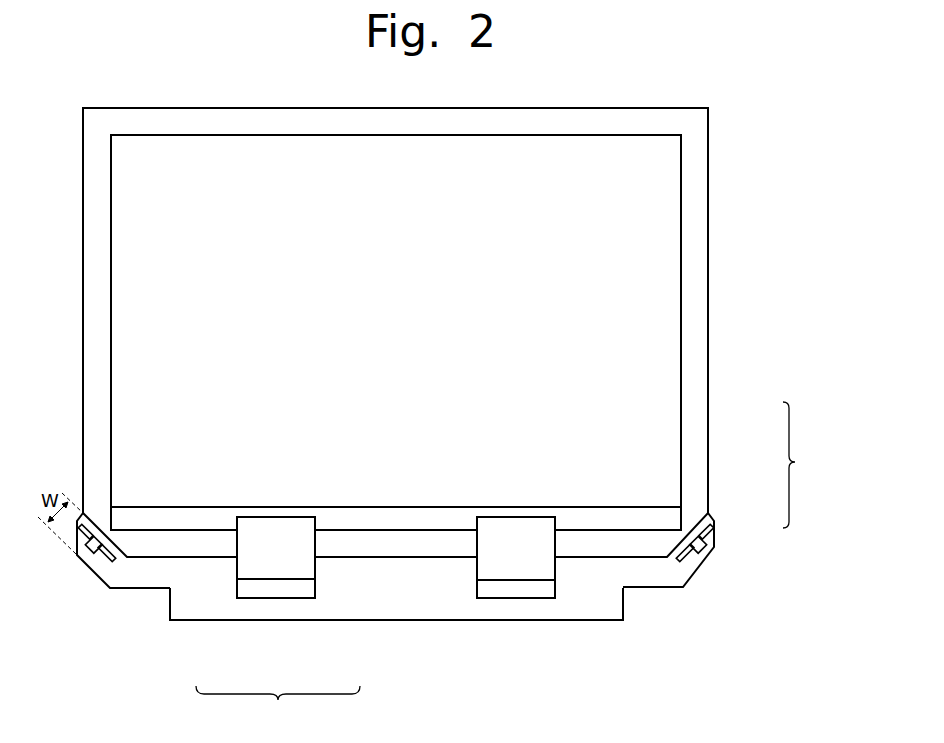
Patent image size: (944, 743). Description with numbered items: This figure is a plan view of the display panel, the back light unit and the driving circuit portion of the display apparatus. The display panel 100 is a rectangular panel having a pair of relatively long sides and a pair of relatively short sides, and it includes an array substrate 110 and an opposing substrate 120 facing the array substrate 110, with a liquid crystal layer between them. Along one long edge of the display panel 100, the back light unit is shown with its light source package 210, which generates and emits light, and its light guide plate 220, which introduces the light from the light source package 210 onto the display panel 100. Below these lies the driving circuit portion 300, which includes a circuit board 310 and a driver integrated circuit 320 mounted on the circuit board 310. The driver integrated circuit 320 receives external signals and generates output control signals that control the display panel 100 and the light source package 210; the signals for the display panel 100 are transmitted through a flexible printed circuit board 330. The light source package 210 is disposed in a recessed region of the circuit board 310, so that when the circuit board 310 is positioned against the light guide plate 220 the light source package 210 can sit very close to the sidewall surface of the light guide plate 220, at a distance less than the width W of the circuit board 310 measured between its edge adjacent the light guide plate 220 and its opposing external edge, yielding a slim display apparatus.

The display panel 100 is at (806, 465).
The array substrate 110 is at (670, 519).
The opposing substrate 120 is at (670, 408).
The light source package 210 is at (693, 537).
The light guide plate 220 is at (698, 311).
The driving circuit portion 300 is at (278, 704).
The circuit board 310 is at (357, 608).
The driver integrated circuit 320 is at (283, 590).
The flexible printed circuit board 330 is at (258, 570).